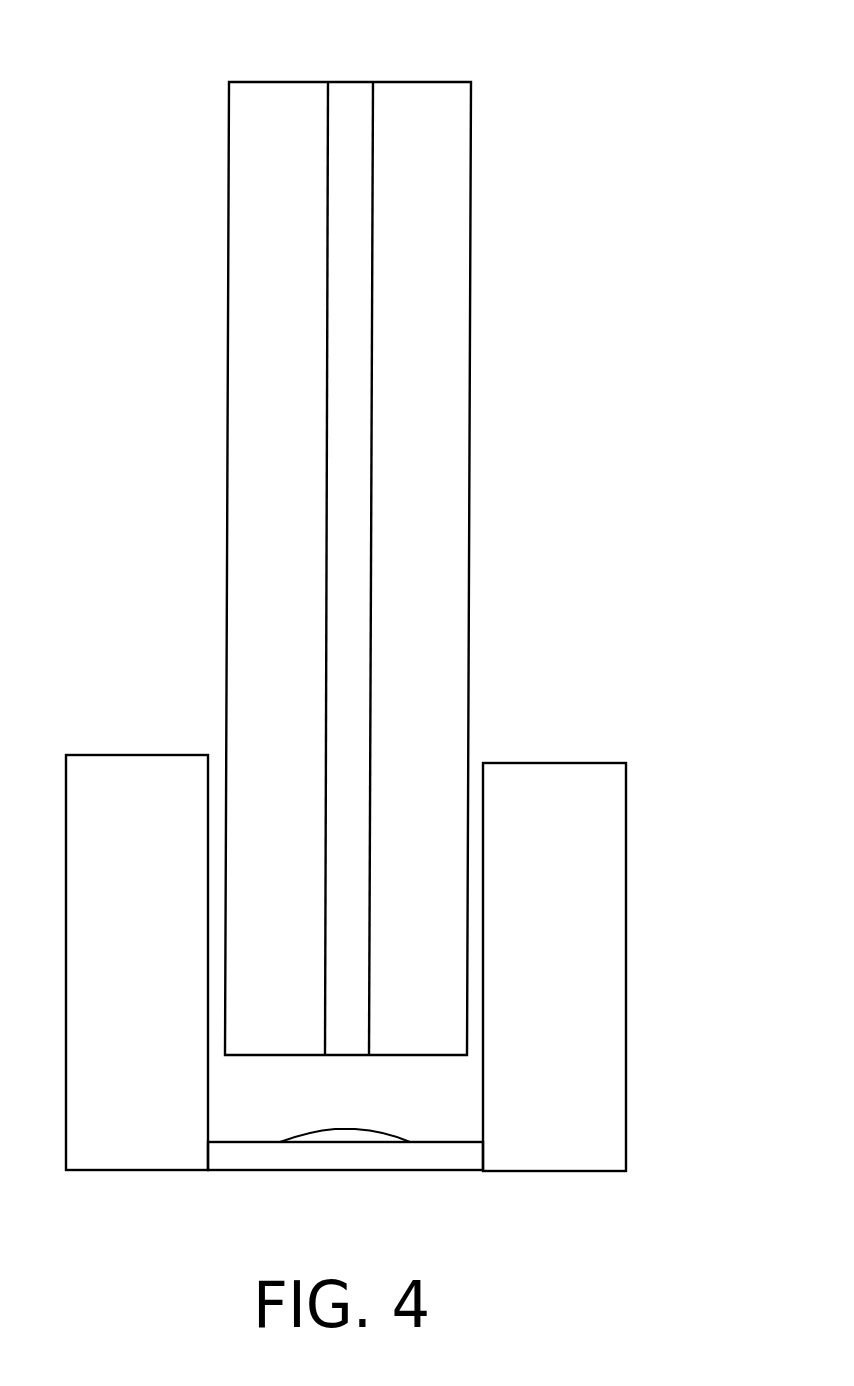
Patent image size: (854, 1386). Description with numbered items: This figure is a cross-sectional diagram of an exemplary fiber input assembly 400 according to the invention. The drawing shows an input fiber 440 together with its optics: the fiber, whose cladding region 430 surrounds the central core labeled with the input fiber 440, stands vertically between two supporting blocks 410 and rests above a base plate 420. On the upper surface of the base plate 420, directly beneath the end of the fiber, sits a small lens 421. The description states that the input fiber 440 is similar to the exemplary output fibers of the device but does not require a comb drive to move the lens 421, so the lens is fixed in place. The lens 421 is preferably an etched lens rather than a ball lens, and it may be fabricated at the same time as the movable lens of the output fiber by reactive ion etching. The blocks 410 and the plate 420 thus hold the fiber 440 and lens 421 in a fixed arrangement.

The optical fiber mounting assembly 400 is at (393, 634).
The support blocks 410 is at (627, 1012).
The substrate plate 420 is at (445, 1168).
The lens 421 is at (373, 1130).
The optical fiber cladding 430 is at (468, 660).
The input fiber 440 is at (352, 90).